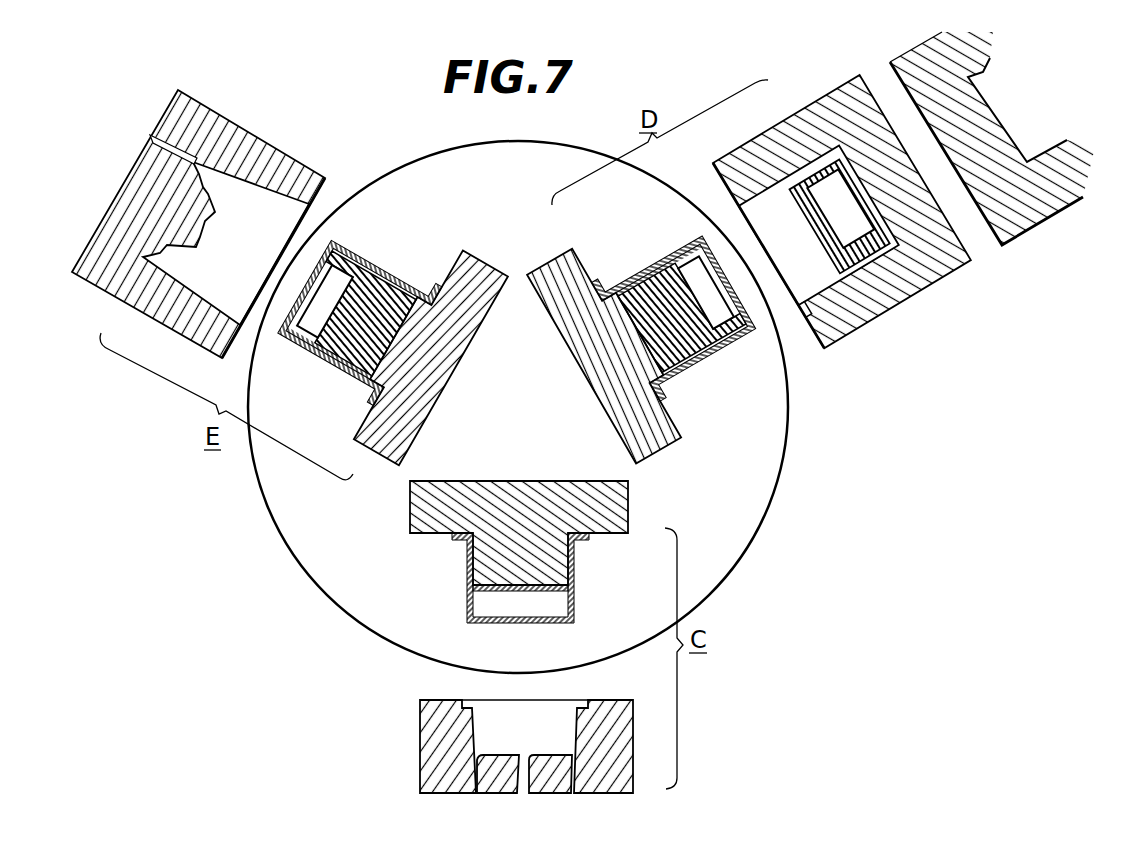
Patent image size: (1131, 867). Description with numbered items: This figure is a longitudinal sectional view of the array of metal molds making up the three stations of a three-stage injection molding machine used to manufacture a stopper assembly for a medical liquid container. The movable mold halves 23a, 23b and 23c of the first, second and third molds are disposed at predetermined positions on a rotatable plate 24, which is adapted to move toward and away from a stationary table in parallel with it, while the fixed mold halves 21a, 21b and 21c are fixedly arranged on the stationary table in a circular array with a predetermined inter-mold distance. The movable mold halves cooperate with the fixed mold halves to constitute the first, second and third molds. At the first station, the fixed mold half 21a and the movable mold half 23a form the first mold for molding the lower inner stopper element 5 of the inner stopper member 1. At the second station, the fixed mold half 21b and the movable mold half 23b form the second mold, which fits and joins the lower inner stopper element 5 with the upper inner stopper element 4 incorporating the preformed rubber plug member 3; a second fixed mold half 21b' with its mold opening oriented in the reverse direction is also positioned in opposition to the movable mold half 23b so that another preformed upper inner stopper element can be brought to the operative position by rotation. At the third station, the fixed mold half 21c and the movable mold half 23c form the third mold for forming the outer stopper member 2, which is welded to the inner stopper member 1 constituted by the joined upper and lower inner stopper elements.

The inner stopper member 1 is at (837, 392).
The outer stopper member 2 is at (383, 264).
The rubber plug member 3 is at (387, 270).
The upper inner stopper element 4 is at (285, 343).
The lower inner stopper element 5 is at (335, 368).
The fixed mold half 21a is at (623, 772).
The fixed mold half 21b is at (970, 138).
The fixed mold half 21b' is at (842, 211).
The fixed mold half 21c is at (127, 290).
The movable mold half 23a is at (612, 515).
The movable mold half 23b is at (572, 262).
The movable mold half 23c is at (367, 428).
The rotatable plate 24 is at (755, 484).